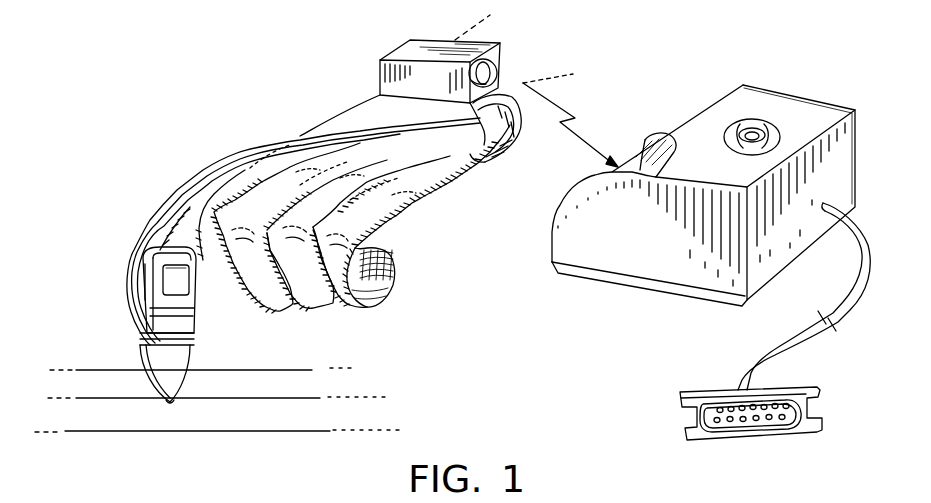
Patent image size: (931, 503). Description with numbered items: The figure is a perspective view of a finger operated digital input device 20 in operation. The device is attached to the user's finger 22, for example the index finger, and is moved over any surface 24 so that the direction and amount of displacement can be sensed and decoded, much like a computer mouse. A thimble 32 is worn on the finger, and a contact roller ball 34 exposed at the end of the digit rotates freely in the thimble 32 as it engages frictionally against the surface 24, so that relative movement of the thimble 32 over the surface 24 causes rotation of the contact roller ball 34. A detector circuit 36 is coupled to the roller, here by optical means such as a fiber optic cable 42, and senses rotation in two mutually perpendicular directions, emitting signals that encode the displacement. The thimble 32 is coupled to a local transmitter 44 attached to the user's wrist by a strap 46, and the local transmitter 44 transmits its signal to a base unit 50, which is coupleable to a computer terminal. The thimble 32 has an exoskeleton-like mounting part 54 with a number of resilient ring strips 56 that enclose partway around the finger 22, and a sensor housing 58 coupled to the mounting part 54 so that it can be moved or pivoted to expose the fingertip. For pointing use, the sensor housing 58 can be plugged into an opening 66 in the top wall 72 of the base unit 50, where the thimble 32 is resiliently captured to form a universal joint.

The digital input device 20 is at (116, 193).
The user's finger 22 is at (202, 229).
The surface 24 is at (313, 396).
The thimble 32 is at (112, 306).
The contact roller ball 34 is at (170, 401).
The detector circuit 36 is at (443, 42).
The fiber optic cable 42 is at (207, 172).
The local transmitter 44 is at (489, 73).
The strap 46 is at (489, 148).
The base unit 50 is at (659, 296).
The mounting part 54 is at (160, 284).
The ring strips 56 is at (176, 307).
The sensor housing 58 is at (170, 377).
The opening 66 is at (764, 126).
The top wall 72 is at (820, 104).